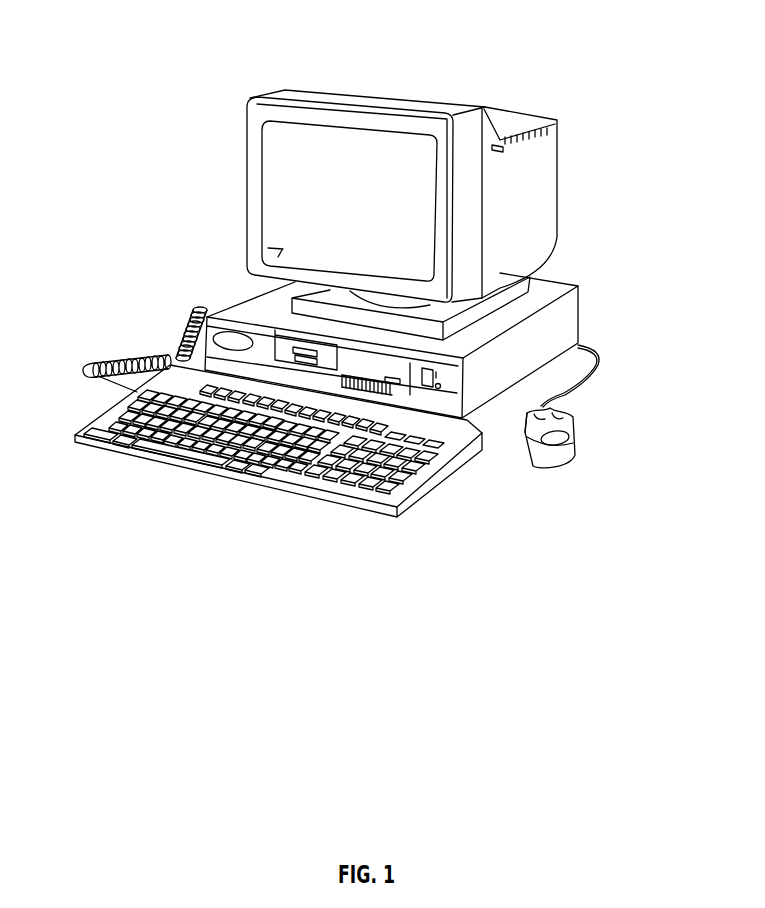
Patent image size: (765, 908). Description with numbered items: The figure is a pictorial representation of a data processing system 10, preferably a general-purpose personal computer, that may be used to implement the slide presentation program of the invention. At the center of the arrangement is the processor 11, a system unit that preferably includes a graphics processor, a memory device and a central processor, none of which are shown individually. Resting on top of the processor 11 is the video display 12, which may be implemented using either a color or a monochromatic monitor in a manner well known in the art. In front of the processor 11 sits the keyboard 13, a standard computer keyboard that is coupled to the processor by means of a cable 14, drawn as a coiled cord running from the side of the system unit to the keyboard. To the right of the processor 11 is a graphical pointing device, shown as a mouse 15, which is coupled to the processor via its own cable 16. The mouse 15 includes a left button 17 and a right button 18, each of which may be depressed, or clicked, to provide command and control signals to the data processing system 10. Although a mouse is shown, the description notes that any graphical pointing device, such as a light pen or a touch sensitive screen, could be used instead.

The data processing system 10 is at (476, 78).
The processor 11 is at (570, 308).
The video display 12 is at (243, 188).
The keyboard 13 is at (275, 495).
The cable 14 is at (180, 320).
The mouse 15 is at (562, 462).
The cable 16 is at (583, 378).
The left button 17 is at (527, 428).
The right button 18 is at (570, 417).